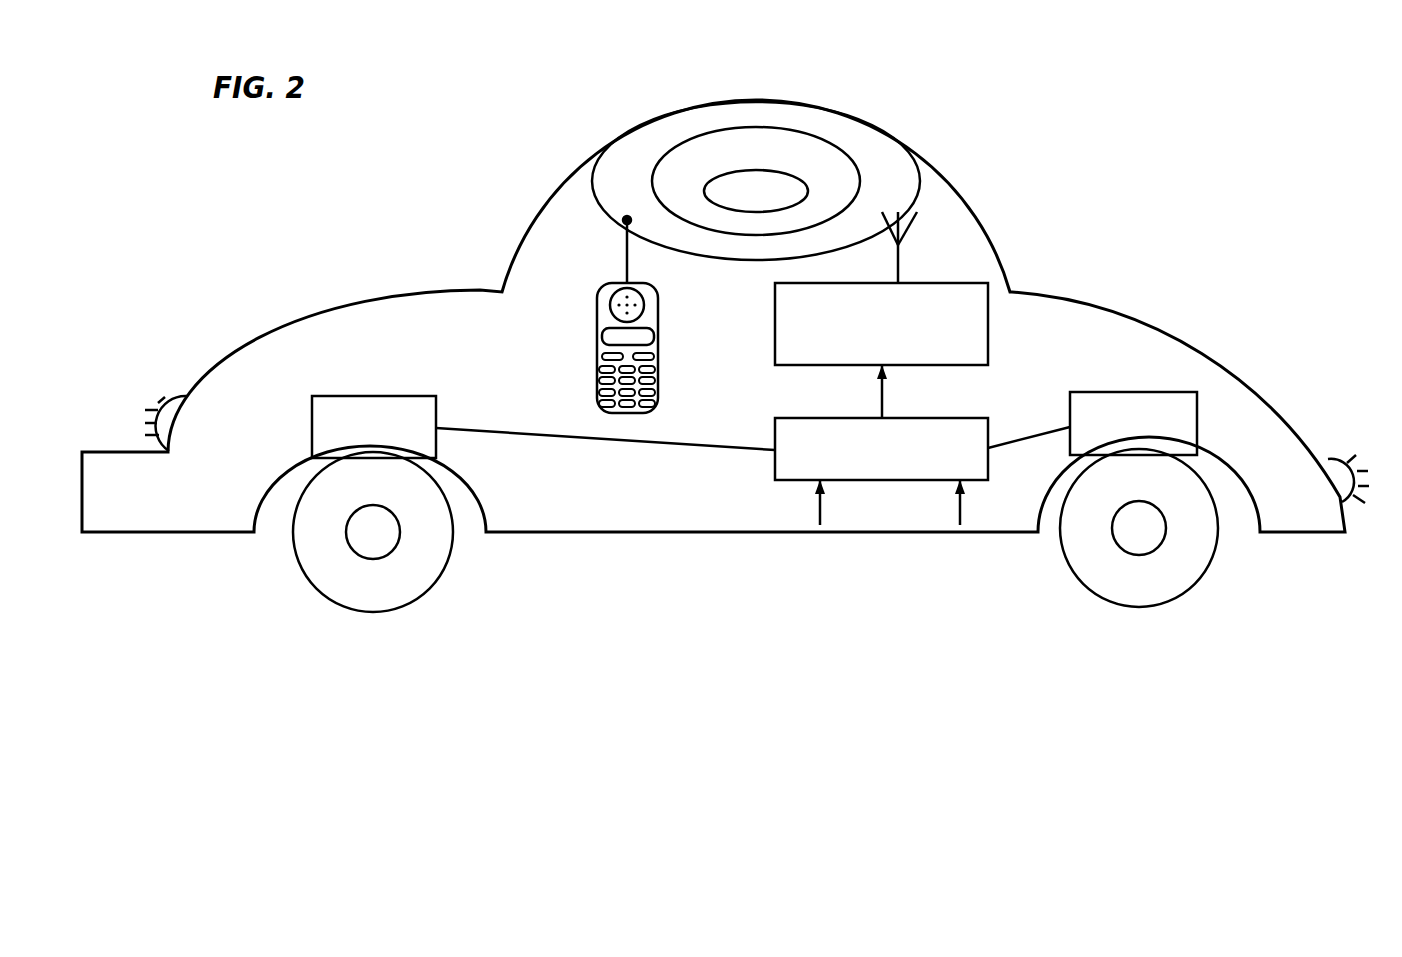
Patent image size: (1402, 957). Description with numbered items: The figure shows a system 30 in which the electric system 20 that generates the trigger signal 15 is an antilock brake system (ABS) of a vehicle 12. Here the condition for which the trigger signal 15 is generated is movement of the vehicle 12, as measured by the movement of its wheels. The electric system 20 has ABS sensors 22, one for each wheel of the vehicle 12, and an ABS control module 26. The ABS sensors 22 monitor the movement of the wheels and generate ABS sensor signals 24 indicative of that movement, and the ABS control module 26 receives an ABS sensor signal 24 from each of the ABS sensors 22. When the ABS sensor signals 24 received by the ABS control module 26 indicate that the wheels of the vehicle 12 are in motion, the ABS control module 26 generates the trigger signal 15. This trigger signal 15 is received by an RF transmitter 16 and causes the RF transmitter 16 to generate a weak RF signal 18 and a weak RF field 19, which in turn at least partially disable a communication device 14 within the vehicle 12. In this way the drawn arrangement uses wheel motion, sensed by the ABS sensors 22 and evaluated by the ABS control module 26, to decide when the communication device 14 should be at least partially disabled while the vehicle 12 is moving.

The vehicle 12 is at (1118, 328).
The communication device 14 is at (597, 380).
The trigger signal 15 is at (884, 399).
The RF transmitter 16 is at (988, 323).
The weak RF signal 18 is at (905, 255).
The weak RF field 19 is at (802, 142).
The electric system 20 is at (1030, 482).
The ABS sensors 22 is at (345, 395).
The ABS sensor signal 24 is at (502, 433).
The ABS control module 26 is at (775, 434).
The system 30 is at (1058, 152).